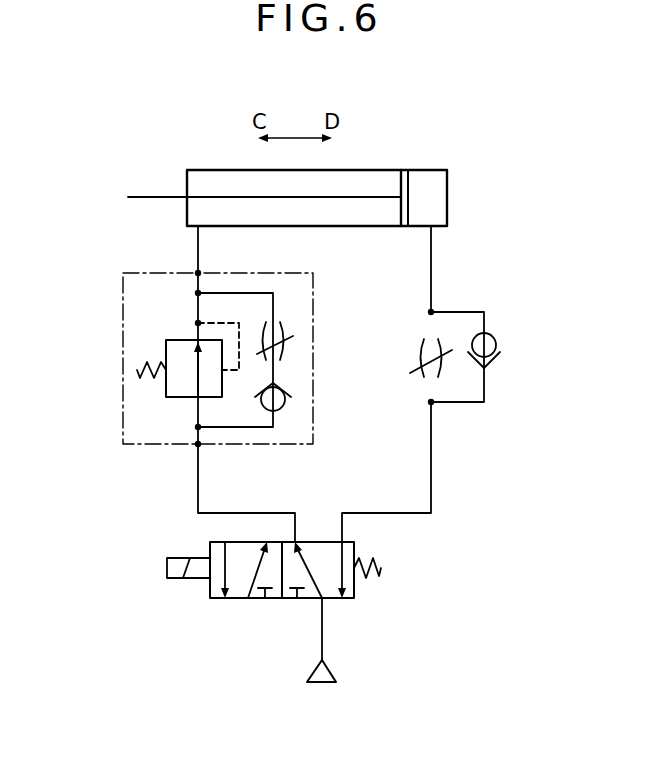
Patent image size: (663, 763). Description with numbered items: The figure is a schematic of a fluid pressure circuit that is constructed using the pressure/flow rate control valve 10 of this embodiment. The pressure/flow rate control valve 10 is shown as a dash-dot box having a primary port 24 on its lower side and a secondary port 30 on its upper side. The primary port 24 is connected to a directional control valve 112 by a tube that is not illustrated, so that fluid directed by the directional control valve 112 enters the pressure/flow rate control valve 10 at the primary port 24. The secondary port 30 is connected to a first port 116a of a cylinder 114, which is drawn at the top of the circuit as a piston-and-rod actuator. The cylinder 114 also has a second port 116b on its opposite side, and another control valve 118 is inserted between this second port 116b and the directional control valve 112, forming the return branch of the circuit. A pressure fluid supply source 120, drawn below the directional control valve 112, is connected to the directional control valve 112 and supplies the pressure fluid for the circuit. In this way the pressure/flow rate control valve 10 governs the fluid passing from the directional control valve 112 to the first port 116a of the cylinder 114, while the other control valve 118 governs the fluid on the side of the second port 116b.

The cylinder 114 is at (347, 169).
The first port 116a is at (195, 228).
The second port 116b is at (434, 228).
The secondary port 30 is at (198, 273).
The pressure/flow rate control valve 10 is at (123, 355).
The primary port 24 is at (198, 446).
The control valve 118 is at (452, 411).
The directional control valve 112 is at (212, 601).
The pressure fluid supply source 120 is at (336, 673).